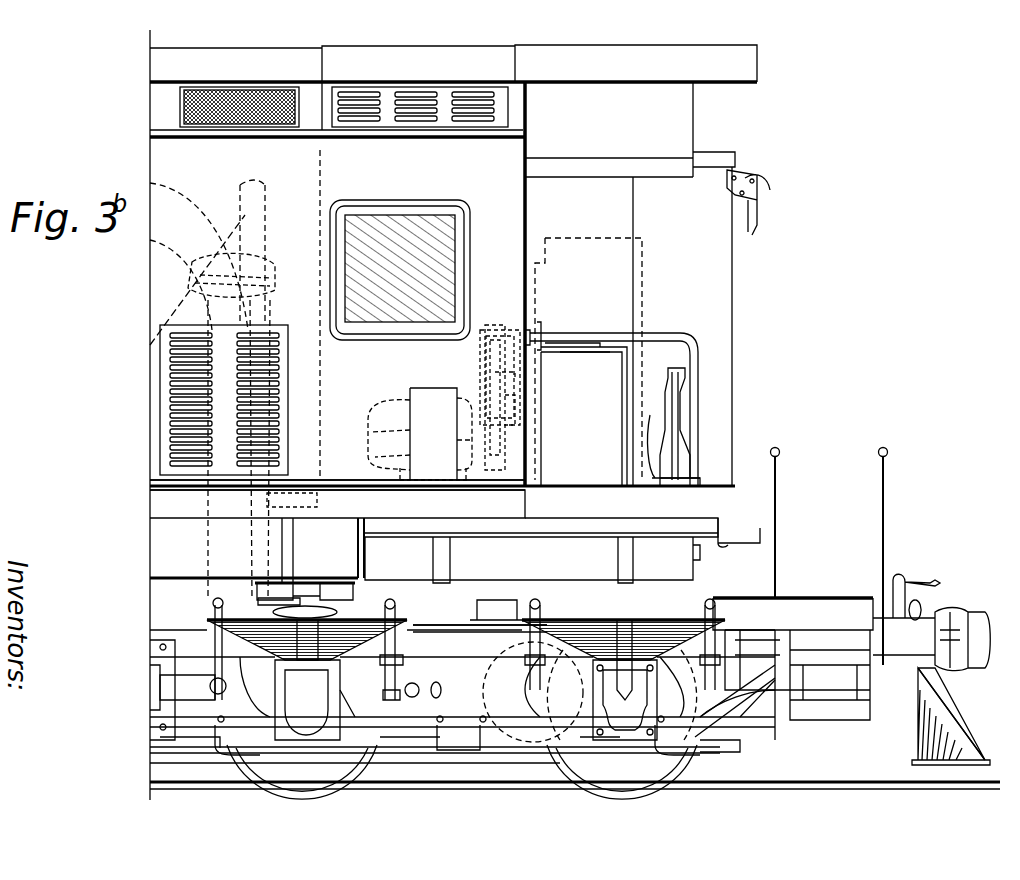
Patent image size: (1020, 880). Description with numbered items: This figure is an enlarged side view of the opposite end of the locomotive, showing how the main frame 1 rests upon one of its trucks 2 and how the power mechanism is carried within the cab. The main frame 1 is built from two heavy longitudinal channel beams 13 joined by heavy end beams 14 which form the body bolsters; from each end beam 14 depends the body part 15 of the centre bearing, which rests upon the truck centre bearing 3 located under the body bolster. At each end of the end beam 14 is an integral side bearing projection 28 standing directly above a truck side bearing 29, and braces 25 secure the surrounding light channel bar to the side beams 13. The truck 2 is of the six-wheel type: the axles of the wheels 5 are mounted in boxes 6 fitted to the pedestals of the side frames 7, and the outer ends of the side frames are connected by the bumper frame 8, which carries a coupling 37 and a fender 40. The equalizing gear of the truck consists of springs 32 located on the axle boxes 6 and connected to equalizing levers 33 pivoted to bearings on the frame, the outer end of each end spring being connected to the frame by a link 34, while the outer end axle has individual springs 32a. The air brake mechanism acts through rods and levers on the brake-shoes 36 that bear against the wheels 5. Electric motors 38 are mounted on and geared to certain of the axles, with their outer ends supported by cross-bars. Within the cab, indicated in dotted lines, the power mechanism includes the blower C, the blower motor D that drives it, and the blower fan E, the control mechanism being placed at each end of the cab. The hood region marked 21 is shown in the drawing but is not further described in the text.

The frame 1 is at (337, 504).
The truck 2 is at (475, 612).
The centre bearing 3 is at (360, 615).
The wheel 5 is at (462, 720).
The box 6 is at (466, 700).
The side frame 7 is at (462, 670).
The bumper frame 8 is at (793, 659).
The longitudinal channel beam 13 is at (372, 525).
The end beam 14 is at (305, 585).
The body part of the centre bearing 15 is at (265, 590).
The hood 21 is at (337, 308).
The brace 25 is at (352, 517).
The side bearing projection 28 is at (305, 592).
The truck side bearing 29 is at (270, 605).
The spring 32 is at (212, 615).
The individual spring 32a is at (665, 618).
The equalizing lever 33 is at (188, 690).
The link 34 is at (395, 614).
The brake-shoe 36 is at (532, 560).
The coupling 37 is at (935, 622).
The electric motor 38 is at (512, 760).
The fender 40 is at (955, 730).
The blower C is at (224, 400).
The blower motor D is at (420, 434).
The blower fan E is at (611, 398).